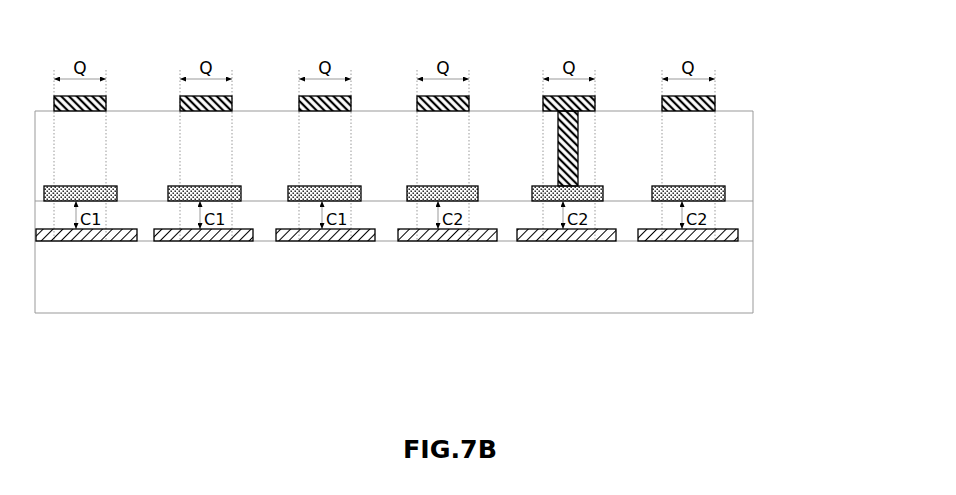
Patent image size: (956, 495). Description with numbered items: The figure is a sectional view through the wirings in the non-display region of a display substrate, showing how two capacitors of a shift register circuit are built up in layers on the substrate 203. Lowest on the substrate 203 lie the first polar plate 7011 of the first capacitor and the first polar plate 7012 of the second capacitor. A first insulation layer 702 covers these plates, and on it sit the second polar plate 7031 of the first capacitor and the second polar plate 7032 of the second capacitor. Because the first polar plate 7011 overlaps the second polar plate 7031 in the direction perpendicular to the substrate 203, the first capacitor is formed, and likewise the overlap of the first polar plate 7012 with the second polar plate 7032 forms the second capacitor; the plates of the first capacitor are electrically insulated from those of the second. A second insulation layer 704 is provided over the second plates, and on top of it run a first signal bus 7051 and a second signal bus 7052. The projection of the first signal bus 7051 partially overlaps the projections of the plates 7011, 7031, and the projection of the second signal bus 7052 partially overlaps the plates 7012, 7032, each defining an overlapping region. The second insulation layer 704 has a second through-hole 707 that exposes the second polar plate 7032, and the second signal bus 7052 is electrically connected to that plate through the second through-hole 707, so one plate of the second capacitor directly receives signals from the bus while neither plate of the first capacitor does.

The substrate 203 is at (730, 288).
The first insulation layer 702 is at (740, 218).
The second insulation layer 704 is at (740, 168).
The second through-hole 707 is at (576, 128).
The first polar plate of the first capacitor 7011 is at (340, 229).
The first polar plate of the second capacitor 7012 is at (683, 229).
The second polar plate of the first capacitor 7031 is at (298, 186).
The second polar plate of the second capacitor 7032 is at (673, 186).
The first signal bus 7051 is at (100, 96).
The second signal bus 7052 is at (458, 97).